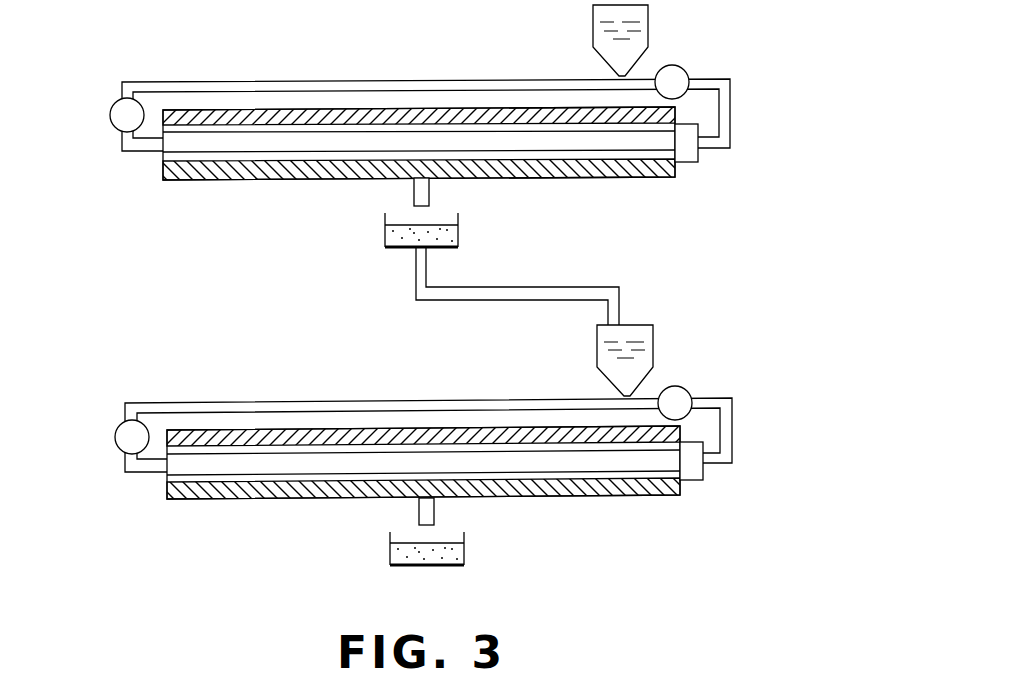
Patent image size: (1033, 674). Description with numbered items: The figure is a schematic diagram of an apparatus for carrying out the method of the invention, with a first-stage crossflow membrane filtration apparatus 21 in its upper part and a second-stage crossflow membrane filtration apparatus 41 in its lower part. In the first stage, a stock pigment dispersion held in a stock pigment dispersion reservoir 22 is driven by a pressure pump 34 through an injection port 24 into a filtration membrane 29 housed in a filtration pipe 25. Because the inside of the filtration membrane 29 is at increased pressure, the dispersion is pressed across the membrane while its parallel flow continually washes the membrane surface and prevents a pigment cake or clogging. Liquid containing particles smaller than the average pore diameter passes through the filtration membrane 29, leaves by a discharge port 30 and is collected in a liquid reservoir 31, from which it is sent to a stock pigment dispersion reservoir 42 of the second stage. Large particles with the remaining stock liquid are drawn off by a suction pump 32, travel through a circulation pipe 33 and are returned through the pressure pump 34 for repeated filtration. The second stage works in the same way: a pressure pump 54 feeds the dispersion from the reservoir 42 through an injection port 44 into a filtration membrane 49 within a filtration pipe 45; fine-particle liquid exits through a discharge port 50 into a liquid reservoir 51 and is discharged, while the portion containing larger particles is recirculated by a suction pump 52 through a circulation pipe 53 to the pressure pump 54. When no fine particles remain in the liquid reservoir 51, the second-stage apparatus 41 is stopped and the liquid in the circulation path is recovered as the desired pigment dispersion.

The first-stage crossflow membrane filtration apparatus 21 is at (382, 171).
The stock pigment dispersion reservoir 22 is at (593, 31).
The injection port 24 is at (703, 160).
The filtration pipe 25 is at (658, 167).
The filtration membrane 29 is at (598, 133).
The discharge port 30 is at (413, 193).
The liquid reservoir 31 is at (460, 233).
The suction pump 32 is at (110, 107).
The circulation pipe 33 is at (180, 83).
The pressure pump 34 is at (688, 65).
The second-stage crossflow membrane filtration apparatus 41 is at (385, 493).
The stock pigment dispersion reservoir 42 is at (597, 345).
The injection port 44 is at (698, 480).
The filtration pipe 45 is at (658, 487).
The filtration membrane 49 is at (602, 453).
The discharge port 50 is at (417, 512).
The liquid reservoir 51 is at (465, 555).
The suction pump 52 is at (112, 432).
The circulation pipe 53 is at (182, 405).
The pressure pump 54 is at (688, 383).